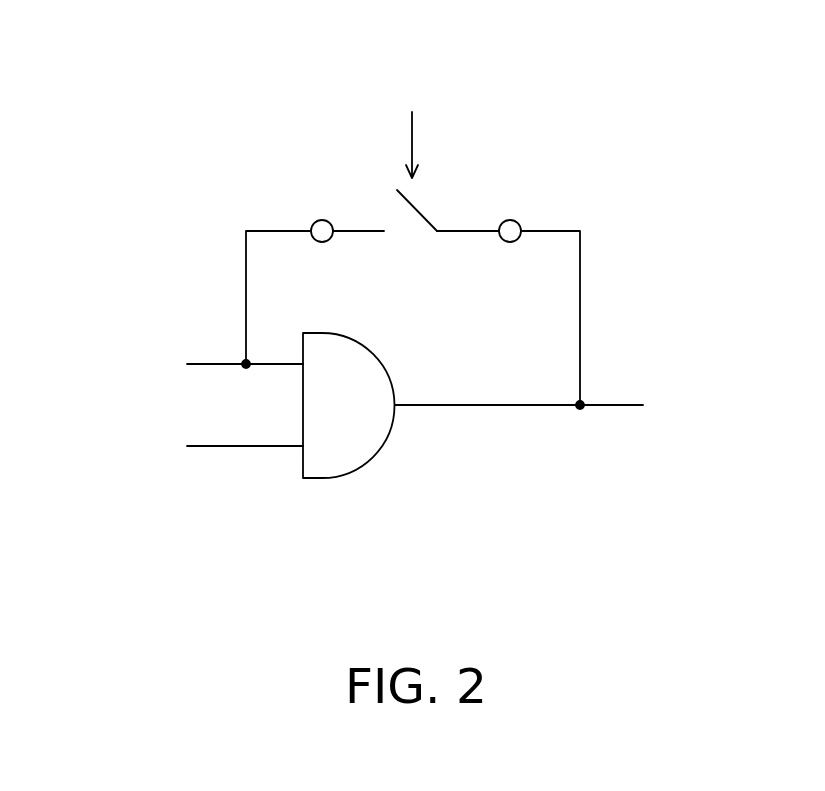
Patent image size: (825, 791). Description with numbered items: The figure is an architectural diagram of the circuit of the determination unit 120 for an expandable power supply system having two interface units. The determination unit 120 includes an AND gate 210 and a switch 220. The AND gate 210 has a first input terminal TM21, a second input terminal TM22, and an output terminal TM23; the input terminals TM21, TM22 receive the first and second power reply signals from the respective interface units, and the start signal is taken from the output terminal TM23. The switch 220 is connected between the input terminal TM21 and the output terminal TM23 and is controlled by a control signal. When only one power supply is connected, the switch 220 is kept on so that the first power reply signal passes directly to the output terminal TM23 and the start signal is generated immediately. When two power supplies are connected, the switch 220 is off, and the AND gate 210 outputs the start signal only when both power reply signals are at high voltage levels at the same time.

The determination unit 120 is at (445, 326).
The AND gate 210 is at (387, 442).
The switch 220 is at (414, 236).
The input terminal TM21 is at (282, 367).
The input terminal TM22 is at (282, 449).
The output terminal TM23 is at (475, 406).